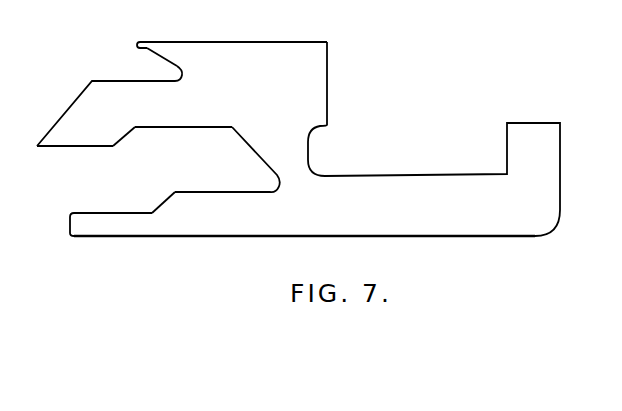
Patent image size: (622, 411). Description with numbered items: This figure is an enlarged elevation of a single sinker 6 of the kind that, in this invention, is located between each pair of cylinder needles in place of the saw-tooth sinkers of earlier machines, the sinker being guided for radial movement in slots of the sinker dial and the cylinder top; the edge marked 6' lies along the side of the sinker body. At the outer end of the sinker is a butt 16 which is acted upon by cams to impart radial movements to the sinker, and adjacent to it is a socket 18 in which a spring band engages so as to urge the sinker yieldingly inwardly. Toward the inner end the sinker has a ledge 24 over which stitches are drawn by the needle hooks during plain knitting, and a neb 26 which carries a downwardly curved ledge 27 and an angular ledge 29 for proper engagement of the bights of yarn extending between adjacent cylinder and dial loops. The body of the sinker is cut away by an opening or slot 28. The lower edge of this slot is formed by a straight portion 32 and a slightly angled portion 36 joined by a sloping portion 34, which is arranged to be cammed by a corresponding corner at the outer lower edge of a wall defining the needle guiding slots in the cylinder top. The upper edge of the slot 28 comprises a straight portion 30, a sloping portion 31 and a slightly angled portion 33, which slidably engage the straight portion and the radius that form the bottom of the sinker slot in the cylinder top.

The sinker 6 is at (238, 34).
The side edge of blank 6' is at (342, 83).
The butt 16 is at (537, 133).
The socket 18 is at (310, 143).
The ledge 24 is at (127, 81).
The neb 26 is at (142, 47).
The downwardly curved ledge 27 is at (162, 53).
The opening or slot 28 is at (281, 189).
The angular ledge 29 is at (182, 64).
The straight portion 30 is at (192, 128).
The sloping portion 31 is at (127, 133).
The straight portion 32 is at (213, 191).
The slightly angled portion 33 is at (73, 147).
The sloping portion 34 is at (163, 203).
The slightly angled portion 36 is at (103, 215).